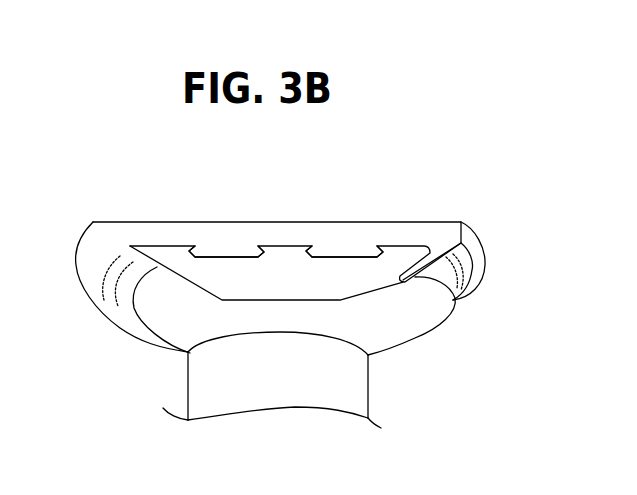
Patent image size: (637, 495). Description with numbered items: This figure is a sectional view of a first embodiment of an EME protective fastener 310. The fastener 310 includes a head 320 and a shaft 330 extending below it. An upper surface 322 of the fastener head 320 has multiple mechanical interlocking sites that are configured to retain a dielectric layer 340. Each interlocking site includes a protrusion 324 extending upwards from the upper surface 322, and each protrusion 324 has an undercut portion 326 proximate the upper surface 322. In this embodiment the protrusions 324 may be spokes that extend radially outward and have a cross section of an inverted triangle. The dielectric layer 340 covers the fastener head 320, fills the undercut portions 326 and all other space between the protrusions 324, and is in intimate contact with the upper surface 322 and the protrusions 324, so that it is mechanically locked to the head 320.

The EME protective fastener 310 is at (398, 187).
The head 320 is at (163, 345).
The upper surface 322 is at (238, 254).
The protrusion 324 is at (172, 245).
The undercut portion 326 is at (198, 255).
The shaft 330 is at (188, 385).
The dielectric layer 340 is at (96, 222).